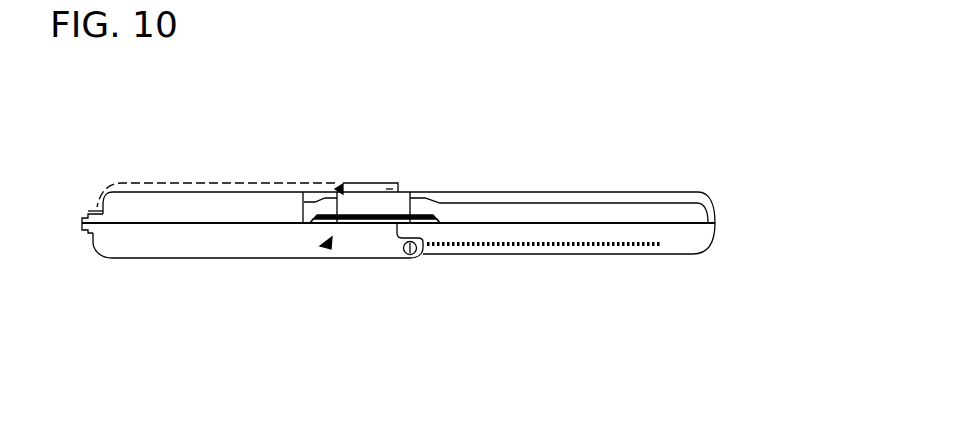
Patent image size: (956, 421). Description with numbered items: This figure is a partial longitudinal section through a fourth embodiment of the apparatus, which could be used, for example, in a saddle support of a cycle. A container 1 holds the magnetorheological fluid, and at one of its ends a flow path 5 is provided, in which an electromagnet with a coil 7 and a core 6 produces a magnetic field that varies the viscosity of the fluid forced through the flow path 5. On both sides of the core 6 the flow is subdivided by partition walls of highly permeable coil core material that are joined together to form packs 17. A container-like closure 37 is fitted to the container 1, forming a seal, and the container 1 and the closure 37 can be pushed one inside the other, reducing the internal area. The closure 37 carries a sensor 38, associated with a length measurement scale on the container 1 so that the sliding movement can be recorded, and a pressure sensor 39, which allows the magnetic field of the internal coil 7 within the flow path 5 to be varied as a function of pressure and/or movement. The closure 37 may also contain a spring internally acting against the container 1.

The container 1 is at (658, 290).
The flow path 5 is at (310, 265).
The core 6 is at (399, 183).
The coil 7 is at (463, 186).
The packs 17 is at (329, 182).
The container-like closure 37 is at (178, 263).
The sensor 38 is at (398, 268).
The pressure sensor 39 is at (80, 243).